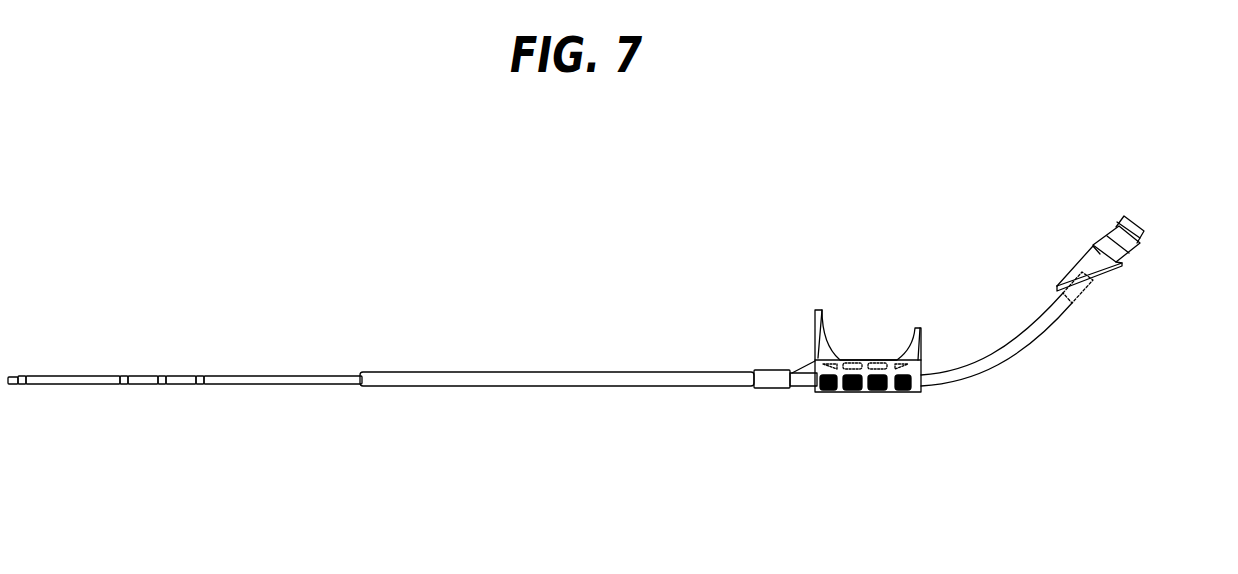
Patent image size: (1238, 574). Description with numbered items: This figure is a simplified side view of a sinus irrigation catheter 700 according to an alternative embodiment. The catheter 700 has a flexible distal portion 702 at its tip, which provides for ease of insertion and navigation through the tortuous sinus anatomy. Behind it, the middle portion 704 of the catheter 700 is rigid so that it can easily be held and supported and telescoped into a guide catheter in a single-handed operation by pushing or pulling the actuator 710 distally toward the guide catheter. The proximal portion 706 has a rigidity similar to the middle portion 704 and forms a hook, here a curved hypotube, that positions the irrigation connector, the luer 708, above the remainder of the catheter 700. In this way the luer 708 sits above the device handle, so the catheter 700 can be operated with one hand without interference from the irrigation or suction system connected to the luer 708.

The sinus irrigation catheter 700 is at (583, 300).
The distal portion 702 is at (228, 386).
The middle portion 704 is at (641, 387).
The proximal portion 706 is at (1006, 360).
The luer 708 is at (1122, 268).
The actuator 710 is at (828, 338).